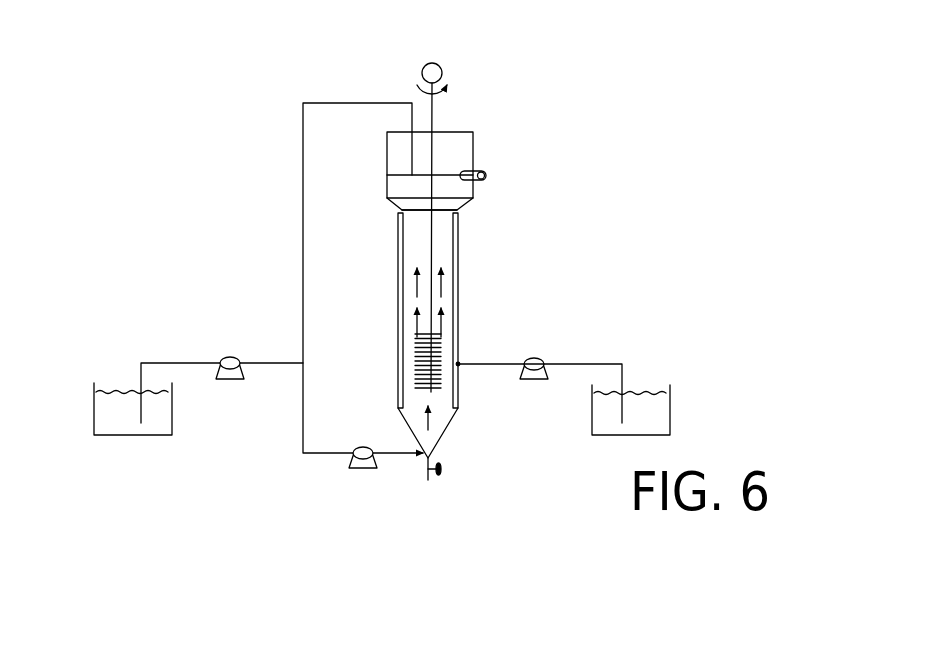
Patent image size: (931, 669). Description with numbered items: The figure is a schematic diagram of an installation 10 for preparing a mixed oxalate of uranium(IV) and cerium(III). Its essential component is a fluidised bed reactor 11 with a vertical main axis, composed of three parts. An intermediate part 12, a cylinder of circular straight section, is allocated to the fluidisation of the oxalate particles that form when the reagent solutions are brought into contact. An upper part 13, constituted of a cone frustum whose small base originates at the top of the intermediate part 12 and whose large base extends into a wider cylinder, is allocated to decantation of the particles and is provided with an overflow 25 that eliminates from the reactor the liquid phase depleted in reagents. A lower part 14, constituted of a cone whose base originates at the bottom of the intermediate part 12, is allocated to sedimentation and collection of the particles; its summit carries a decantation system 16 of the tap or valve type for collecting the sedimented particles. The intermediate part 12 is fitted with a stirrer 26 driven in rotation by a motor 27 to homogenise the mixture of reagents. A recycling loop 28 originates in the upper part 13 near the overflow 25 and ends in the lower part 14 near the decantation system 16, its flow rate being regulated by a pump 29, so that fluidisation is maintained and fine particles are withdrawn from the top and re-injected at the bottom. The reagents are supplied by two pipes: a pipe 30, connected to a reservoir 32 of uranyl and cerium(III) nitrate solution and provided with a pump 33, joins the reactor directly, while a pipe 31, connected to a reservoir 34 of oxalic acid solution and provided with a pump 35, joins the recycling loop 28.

The installation 10 is at (668, 50).
The fluidised bed reactor 11 is at (467, 339).
The intermediate part 12 is at (398, 325).
The upper part 13 is at (387, 165).
The lower part 14 is at (447, 430).
The decantation system 16 is at (441, 469).
The overflow 25 is at (486, 176).
The stirrer 26 is at (432, 232).
The motor 27 is at (442, 70).
The recycling loop 28 is at (303, 215).
The pump 29 is at (360, 446).
The pipe 30 is at (585, 362).
The pipe 31 is at (170, 362).
The reservoir 32 is at (660, 412).
The pump 33 is at (535, 357).
The reservoir 34 is at (96, 418).
The pump 35 is at (228, 356).